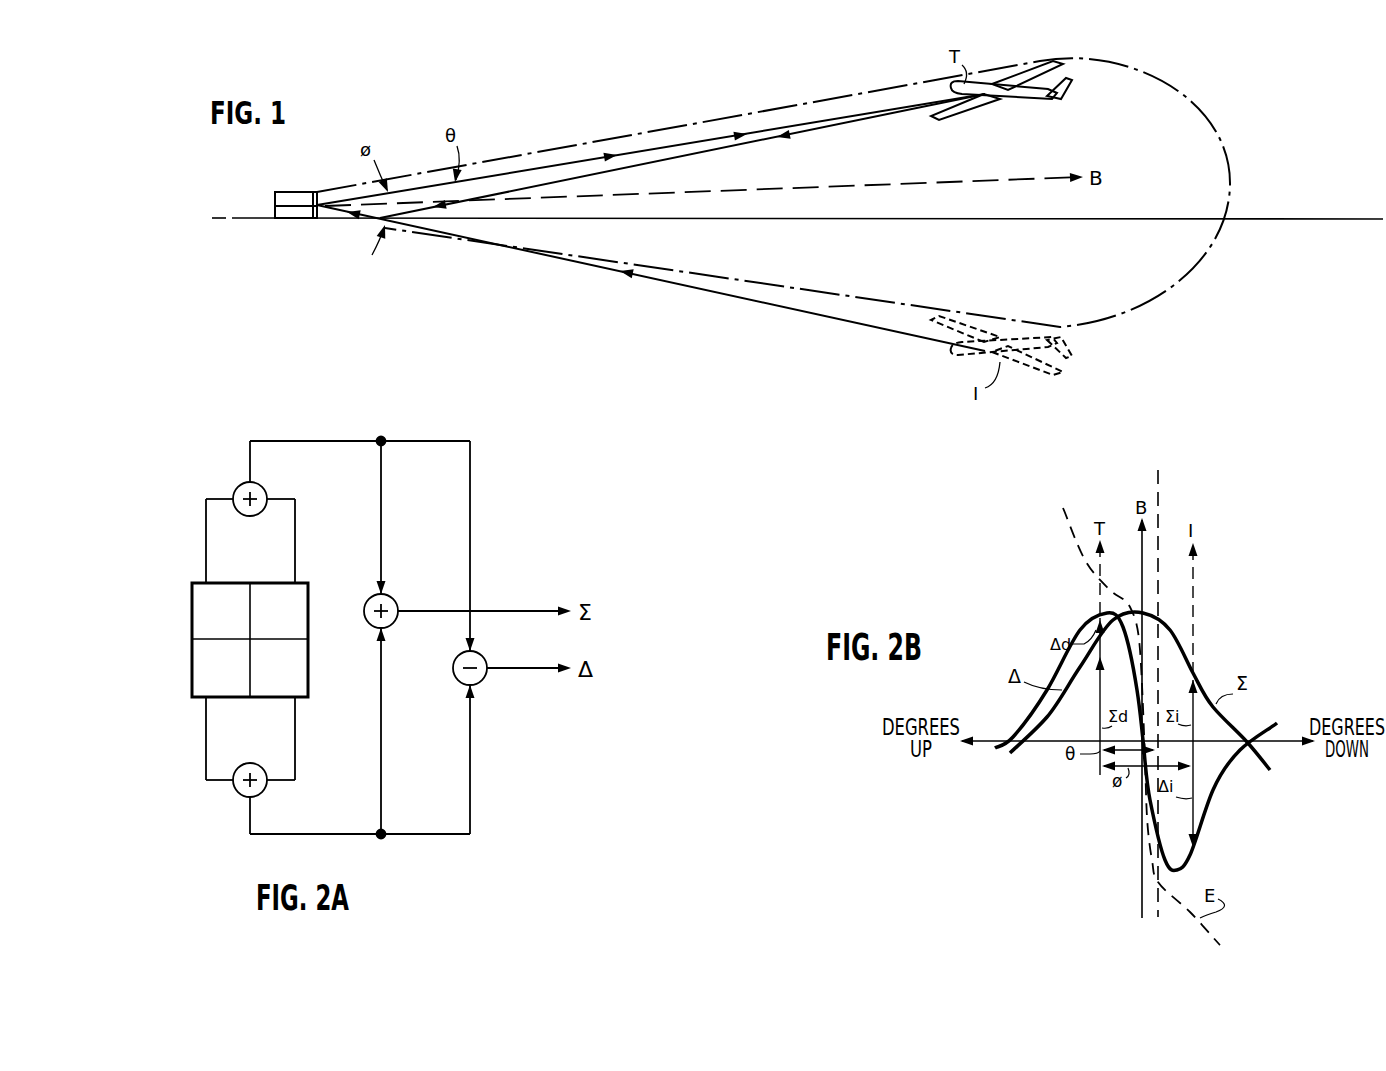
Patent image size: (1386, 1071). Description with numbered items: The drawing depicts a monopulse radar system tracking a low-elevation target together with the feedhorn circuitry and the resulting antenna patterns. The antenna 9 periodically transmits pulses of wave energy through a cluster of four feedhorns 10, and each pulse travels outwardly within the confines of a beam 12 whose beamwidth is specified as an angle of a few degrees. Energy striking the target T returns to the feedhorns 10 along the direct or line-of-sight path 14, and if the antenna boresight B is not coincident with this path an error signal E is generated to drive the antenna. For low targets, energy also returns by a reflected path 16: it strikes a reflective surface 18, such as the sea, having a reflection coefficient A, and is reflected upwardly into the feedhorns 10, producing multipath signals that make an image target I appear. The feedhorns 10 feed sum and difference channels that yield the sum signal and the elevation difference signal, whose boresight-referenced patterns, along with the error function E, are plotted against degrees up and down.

In FIG. 1, the antenna 9 is at (283, 190).
In FIG. 2A, the cluster of four feedhorns 10 is at (176, 590).
In FIG. 1, the beam 12 is at (797, 86).
In FIG. 1, the direct or line-of-sight path 14 is at (572, 160).
In FIG. 1, the reflected path 16 is at (688, 157).
In FIG. 1, the reflective surface 18 is at (1335, 216).
In FIG. 2B, the reflective surface 18 is at (1160, 500).